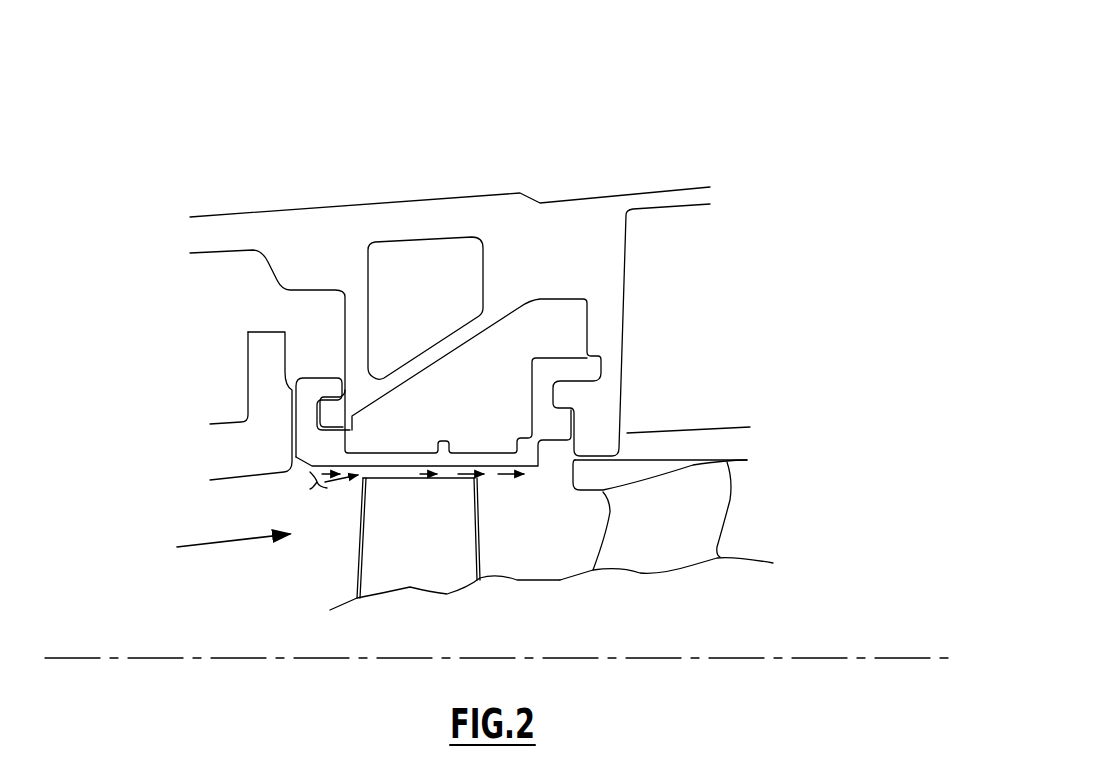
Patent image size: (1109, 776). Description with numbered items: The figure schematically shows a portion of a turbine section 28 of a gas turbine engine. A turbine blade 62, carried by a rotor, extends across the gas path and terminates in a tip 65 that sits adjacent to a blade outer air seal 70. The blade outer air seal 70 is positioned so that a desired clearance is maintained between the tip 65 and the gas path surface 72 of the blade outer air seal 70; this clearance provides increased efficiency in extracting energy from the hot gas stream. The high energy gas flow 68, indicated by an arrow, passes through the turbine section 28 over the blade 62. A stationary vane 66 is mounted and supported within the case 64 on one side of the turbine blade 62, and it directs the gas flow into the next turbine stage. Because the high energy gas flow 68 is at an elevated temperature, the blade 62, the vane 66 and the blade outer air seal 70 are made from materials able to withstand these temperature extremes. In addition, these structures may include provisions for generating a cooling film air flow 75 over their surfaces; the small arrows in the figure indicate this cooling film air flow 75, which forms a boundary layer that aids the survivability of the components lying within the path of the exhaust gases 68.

The turbine section 28 is at (658, 99).
The case 64 is at (535, 220).
The blade outer air seal 70 is at (355, 460).
The tip 65 is at (411, 465).
The cooling film air flow 75 is at (313, 482).
The gas path surface 72 is at (519, 485).
The turbine blade 62 is at (455, 508).
The stationary vane 66 is at (713, 497).
The high energy gas flow 68 is at (227, 543).